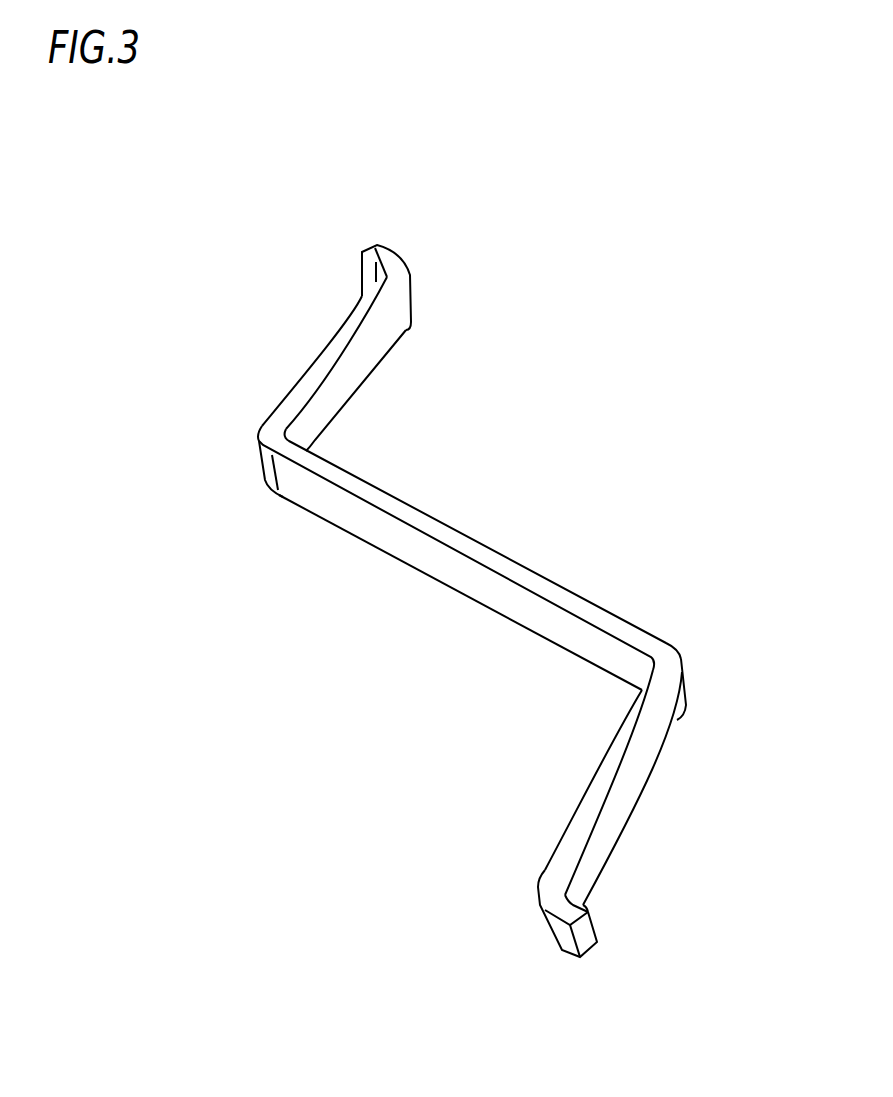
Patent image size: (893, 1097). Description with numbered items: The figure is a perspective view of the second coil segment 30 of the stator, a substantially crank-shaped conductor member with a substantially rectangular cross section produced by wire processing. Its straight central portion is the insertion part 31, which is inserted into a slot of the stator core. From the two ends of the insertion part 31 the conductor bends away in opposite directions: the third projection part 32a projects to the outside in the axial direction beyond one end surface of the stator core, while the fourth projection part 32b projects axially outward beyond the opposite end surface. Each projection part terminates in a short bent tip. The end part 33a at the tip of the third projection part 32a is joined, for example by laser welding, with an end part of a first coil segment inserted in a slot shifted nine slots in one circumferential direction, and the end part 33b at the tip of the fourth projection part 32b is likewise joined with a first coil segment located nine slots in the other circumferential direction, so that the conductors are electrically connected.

The second coil segment 30 is at (527, 458).
The insertion part 31 is at (563, 597).
The third projection part 32a is at (627, 783).
The fourth projection part 32b is at (352, 360).
The end part 33a is at (583, 903).
The end part 33b is at (383, 247).